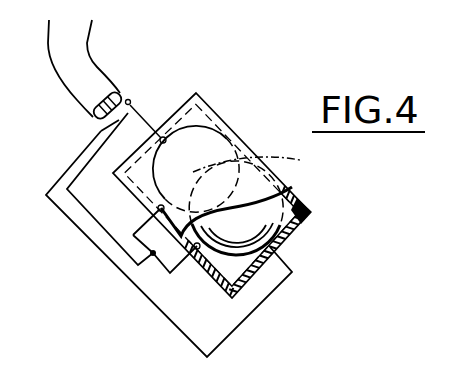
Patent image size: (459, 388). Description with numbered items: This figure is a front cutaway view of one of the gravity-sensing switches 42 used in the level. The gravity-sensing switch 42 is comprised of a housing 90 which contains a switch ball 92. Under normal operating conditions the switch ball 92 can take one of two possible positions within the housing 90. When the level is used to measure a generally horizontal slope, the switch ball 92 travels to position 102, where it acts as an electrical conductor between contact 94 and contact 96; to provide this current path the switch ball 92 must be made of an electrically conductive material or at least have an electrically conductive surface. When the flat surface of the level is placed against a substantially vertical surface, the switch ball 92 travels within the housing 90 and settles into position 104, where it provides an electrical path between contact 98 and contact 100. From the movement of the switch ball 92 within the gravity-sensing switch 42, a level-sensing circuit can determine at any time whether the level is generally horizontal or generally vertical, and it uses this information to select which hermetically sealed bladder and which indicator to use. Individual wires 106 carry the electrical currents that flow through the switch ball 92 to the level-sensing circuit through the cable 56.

The gravity-sensing switch 42 is at (270, 109).
The cable 56 is at (93, 47).
The housing 90 is at (212, 109).
The switch ball 92 is at (290, 193).
The contact 94 is at (273, 244).
The contact 96 is at (196, 250).
The contact 98 is at (158, 207).
The contact 100 is at (164, 136).
The position 102 is at (259, 229).
The position 104 is at (209, 164).
The individual wires 106 is at (107, 118).